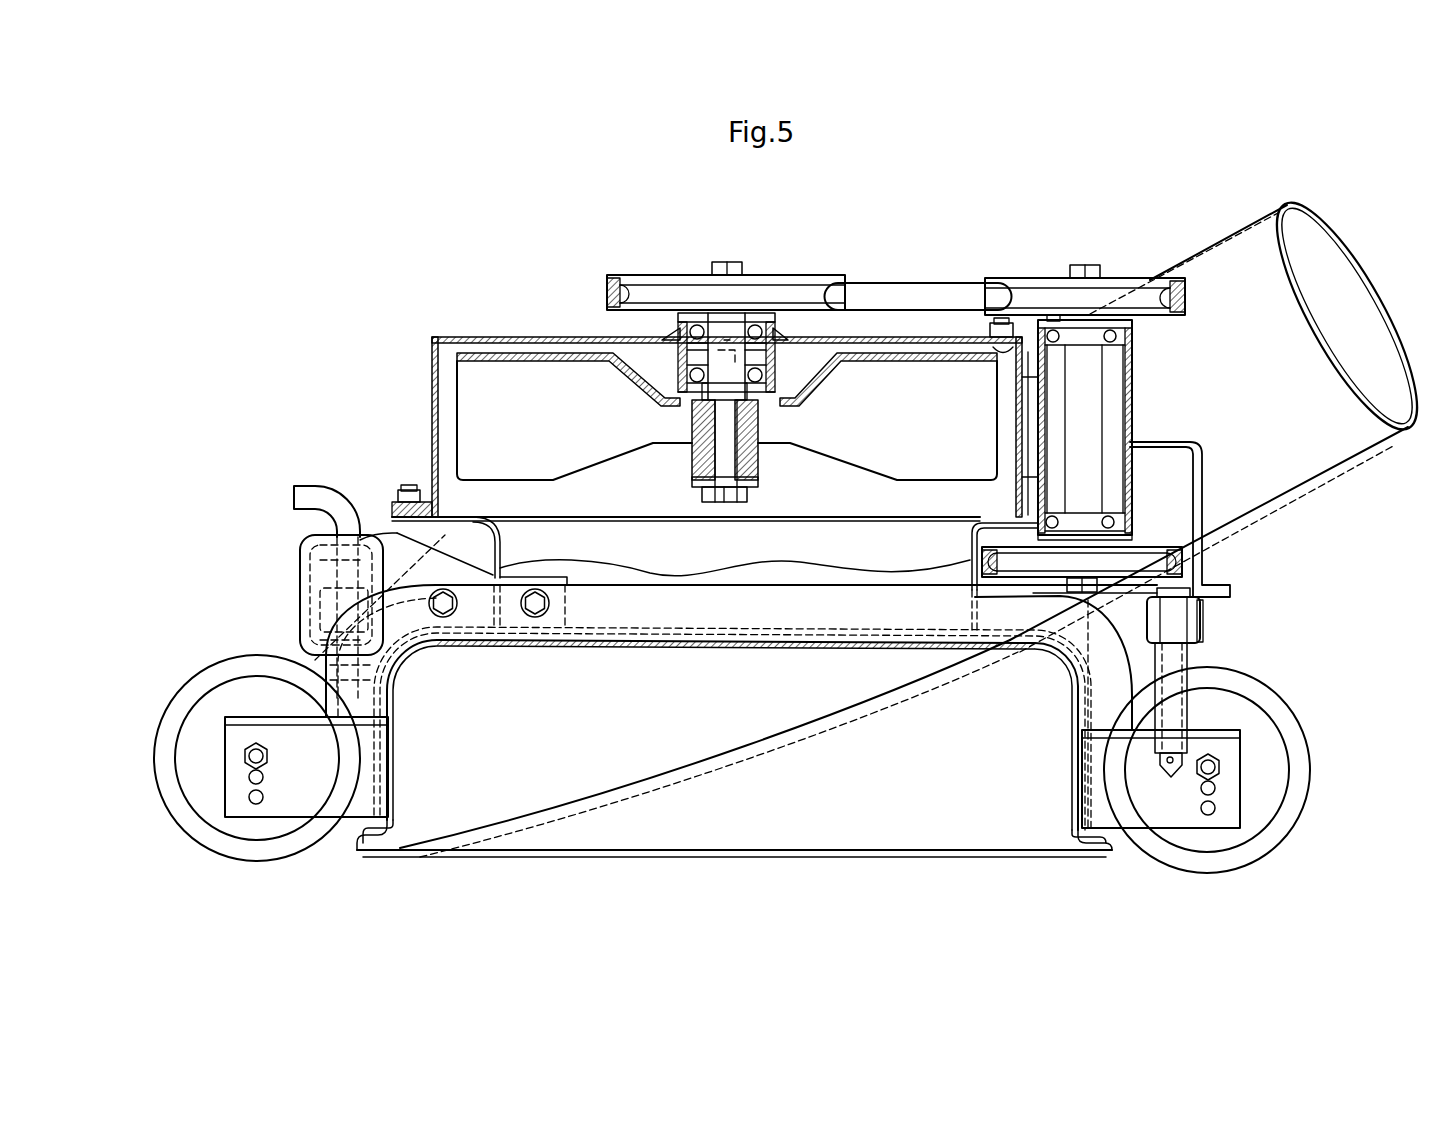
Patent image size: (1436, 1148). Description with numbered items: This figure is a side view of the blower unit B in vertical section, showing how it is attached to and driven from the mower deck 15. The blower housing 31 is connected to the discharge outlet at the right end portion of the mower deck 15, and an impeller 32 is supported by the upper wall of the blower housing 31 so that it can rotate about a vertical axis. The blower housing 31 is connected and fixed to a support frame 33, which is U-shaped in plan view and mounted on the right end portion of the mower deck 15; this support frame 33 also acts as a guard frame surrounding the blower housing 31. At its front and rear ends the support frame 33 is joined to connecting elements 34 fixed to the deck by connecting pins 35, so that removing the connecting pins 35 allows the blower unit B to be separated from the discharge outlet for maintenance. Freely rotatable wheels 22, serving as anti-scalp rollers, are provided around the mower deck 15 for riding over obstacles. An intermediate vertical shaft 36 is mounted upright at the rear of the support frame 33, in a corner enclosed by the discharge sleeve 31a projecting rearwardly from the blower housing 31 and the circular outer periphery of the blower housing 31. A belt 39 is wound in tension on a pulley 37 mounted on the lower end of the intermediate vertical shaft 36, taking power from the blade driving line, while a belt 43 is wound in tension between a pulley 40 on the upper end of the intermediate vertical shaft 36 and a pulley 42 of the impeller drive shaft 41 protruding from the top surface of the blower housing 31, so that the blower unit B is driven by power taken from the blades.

The mower deck 15 is at (688, 645).
The wheel 22 is at (232, 662).
The blower housing 31 is at (522, 338).
The discharge sleeve 31a is at (1228, 252).
The impeller 32 is at (462, 412).
The support frame 33 is at (318, 600).
The connecting element 34 is at (300, 560).
The connecting pin 35 is at (312, 486).
The intermediate vertical shaft 36 is at (1090, 397).
The pulley 37 is at (1148, 547).
The belt 39 is at (1175, 560).
The pulley 40 is at (1040, 278).
The impeller drive shaft 41 is at (723, 330).
The pulley 42 is at (787, 275).
The belt 43 is at (930, 283).
The blower unit B is at (438, 328).